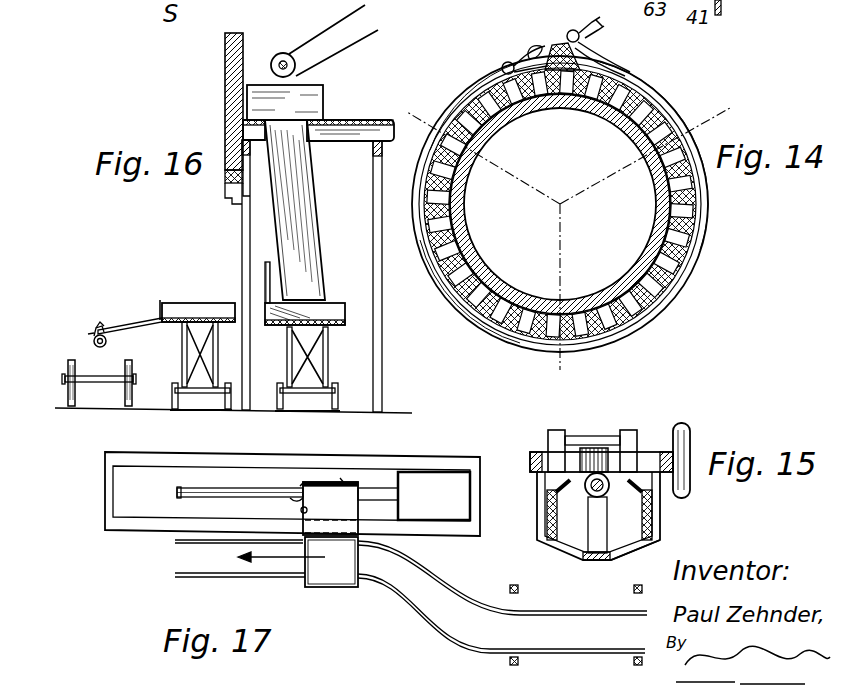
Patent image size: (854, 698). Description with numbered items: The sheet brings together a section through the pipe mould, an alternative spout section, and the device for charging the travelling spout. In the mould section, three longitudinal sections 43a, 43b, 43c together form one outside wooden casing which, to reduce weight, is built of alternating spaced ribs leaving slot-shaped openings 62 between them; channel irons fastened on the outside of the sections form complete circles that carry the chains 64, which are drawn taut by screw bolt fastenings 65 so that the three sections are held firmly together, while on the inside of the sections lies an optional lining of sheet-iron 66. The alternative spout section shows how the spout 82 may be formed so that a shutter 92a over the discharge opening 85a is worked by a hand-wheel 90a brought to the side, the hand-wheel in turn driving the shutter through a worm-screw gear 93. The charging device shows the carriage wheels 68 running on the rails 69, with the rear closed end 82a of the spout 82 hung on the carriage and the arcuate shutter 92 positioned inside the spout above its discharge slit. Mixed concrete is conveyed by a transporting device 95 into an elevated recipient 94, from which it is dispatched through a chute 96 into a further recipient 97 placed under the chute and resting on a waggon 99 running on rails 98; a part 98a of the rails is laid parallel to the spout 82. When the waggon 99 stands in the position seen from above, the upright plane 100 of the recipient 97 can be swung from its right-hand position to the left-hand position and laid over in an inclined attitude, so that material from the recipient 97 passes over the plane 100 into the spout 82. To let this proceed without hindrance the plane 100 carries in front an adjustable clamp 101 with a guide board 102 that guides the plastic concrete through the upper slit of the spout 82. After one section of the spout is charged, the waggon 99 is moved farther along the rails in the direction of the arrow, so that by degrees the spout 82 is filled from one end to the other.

In FIG. 14, the mould section 43a is at (690, 262).
In FIG. 14, the mould section 43b is at (447, 283).
In FIG. 14, the mould section 43c is at (468, 100).
In FIG. 14, the slot-shaped openings 62 is at (463, 226).
In FIG. 14, the chains 64 is at (462, 133).
In FIG. 14, the screw bolt fastenings 65 is at (574, 29).
In FIG. 14, the lining of sheet-iron 66 is at (475, 252).
In FIG. 16, the wheels 68 is at (125, 366).
In FIG. 16, the rails 69 is at (125, 398).
In FIG. 16, the spout 82 is at (93, 340).
In FIG. 17, the spout 82 is at (177, 490).
In FIG. 17, the rear closed end of the spout 82a is at (419, 494).
In FIG. 15, the discharge opening 85a is at (622, 560).
In FIG. 15, the hand-wheel 90a is at (683, 422).
In FIG. 16, the shutter 92 is at (152, 322).
In FIG. 15, the shutter 92a is at (592, 562).
In FIG. 15, the worm-screw gear 93 is at (594, 447).
In FIG. 16, the elevated recipient 94 is at (312, 97).
In FIG. 16, the transporting device 95 is at (324, 30).
In FIG. 16, the chute 96 is at (304, 217).
In FIG. 16, the recipient 97 is at (330, 311).
In FIG. 17, the recipient 97 is at (350, 565).
In FIG. 16, the rails 98 is at (288, 412).
In FIG. 17, the rails 98 is at (562, 616).
In FIG. 16, the rail part 98a is at (220, 411).
In FIG. 17, the rail part 98a is at (226, 573).
In FIG. 16, the waggon 99 is at (288, 357).
In FIG. 16, the upright plane 100 is at (265, 270).
In FIG. 17, the upright plane 100 is at (300, 511).
In FIG. 16, the adjustable clamp 101 is at (100, 324).
In FIG. 17, the adjustable clamp 101 is at (298, 497).
In FIG. 16, the guide board 102 is at (90, 333).
In FIG. 17, the guide board 102 is at (335, 480).